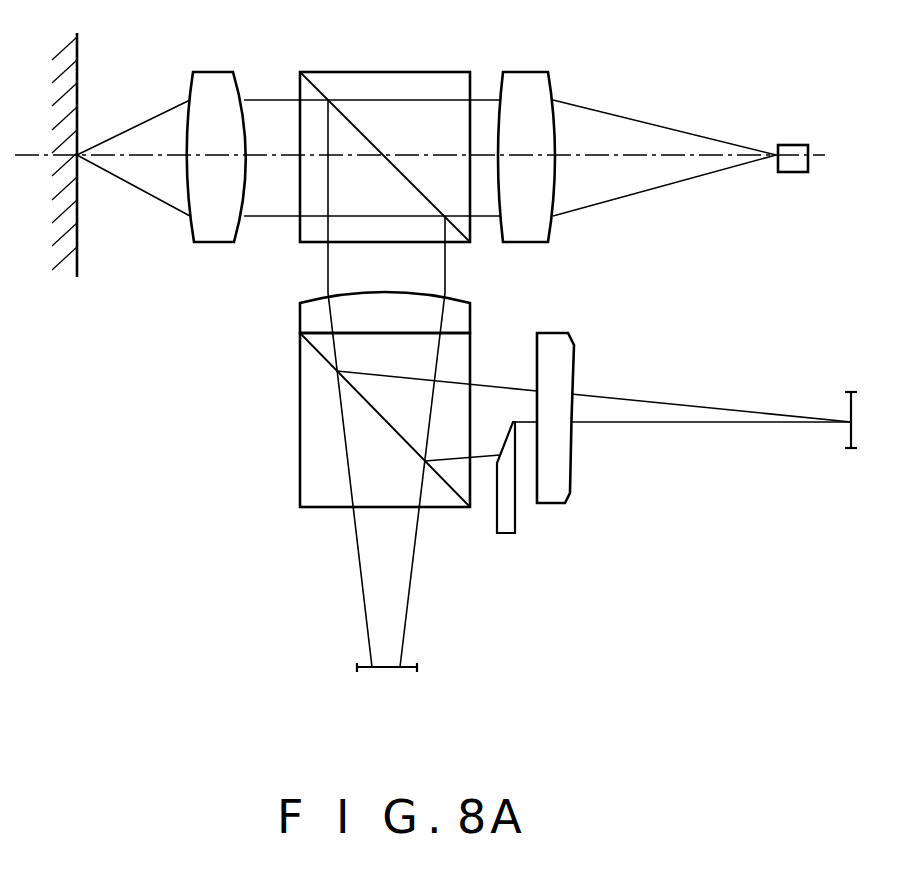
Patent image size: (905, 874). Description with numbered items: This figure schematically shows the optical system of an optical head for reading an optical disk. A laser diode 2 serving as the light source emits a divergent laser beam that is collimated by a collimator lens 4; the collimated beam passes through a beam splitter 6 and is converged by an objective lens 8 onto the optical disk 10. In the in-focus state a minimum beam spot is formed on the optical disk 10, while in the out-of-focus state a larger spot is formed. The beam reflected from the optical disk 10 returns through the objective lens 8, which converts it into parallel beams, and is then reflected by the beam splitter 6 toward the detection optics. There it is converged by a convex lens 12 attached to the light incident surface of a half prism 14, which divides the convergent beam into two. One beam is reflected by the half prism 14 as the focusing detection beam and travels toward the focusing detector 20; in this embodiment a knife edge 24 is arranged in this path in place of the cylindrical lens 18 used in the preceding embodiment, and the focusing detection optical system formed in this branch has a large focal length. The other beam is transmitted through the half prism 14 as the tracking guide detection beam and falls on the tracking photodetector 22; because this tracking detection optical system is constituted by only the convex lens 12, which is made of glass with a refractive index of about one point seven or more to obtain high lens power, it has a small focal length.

The laser diode 2 is at (792, 145).
The collimator lens 4 is at (521, 78).
The beam splitter 6 is at (376, 72).
The objective lens 8 is at (211, 72).
The optical disk 10 is at (79, 70).
The convex lens 12 is at (465, 314).
The half prism 14 is at (312, 462).
The cylindrical lens 18 is at (555, 504).
The focusing detector 20 is at (850, 410).
The tracking photodetector 22 is at (390, 670).
The knife edge 24 is at (504, 535).